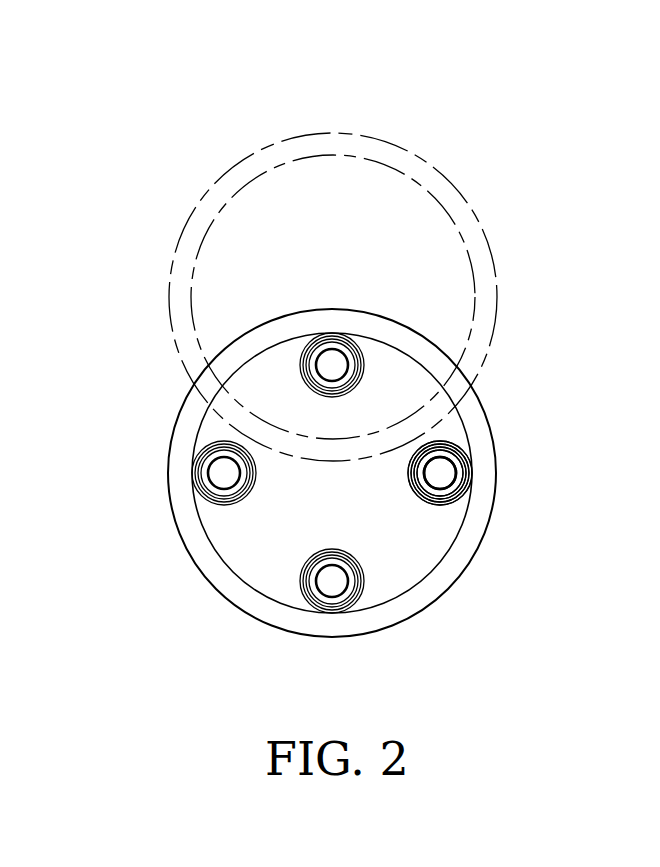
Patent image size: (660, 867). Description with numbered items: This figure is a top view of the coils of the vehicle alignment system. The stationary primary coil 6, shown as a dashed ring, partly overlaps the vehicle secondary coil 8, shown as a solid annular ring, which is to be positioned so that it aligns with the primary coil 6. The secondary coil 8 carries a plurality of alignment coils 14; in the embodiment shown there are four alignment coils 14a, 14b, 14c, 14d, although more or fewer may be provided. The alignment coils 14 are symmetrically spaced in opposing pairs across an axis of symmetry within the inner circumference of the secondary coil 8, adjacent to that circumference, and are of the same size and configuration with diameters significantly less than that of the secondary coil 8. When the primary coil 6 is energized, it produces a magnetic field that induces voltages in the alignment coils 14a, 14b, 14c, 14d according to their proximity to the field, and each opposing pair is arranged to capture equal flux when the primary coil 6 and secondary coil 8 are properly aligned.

The primary coil 6 is at (421, 157).
The secondary coil 8 is at (493, 521).
The alignment coils 14 is at (460, 443).
The alignment coil 14a is at (343, 336).
The alignment coil 14b is at (462, 472).
The alignment coil 14c is at (350, 598).
The alignment coil 14d is at (200, 473).